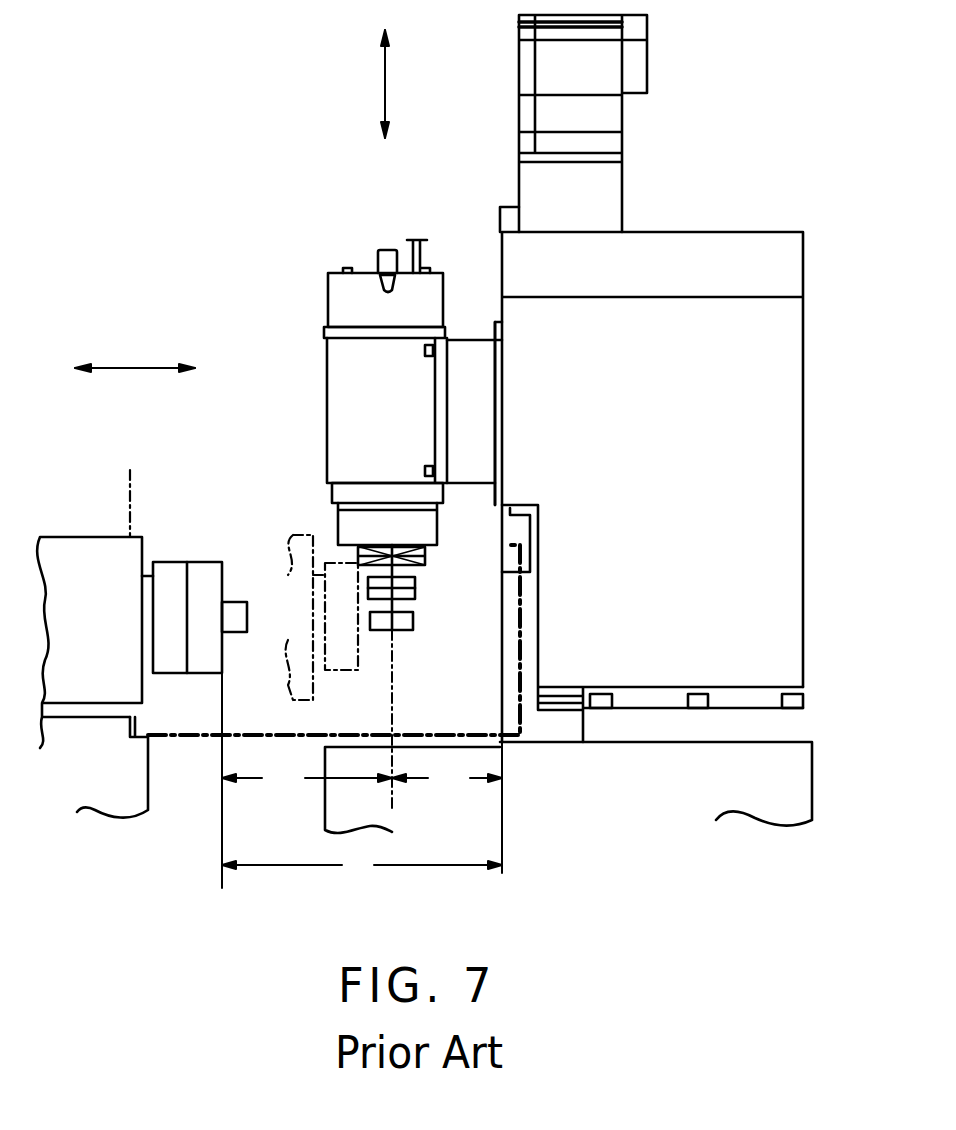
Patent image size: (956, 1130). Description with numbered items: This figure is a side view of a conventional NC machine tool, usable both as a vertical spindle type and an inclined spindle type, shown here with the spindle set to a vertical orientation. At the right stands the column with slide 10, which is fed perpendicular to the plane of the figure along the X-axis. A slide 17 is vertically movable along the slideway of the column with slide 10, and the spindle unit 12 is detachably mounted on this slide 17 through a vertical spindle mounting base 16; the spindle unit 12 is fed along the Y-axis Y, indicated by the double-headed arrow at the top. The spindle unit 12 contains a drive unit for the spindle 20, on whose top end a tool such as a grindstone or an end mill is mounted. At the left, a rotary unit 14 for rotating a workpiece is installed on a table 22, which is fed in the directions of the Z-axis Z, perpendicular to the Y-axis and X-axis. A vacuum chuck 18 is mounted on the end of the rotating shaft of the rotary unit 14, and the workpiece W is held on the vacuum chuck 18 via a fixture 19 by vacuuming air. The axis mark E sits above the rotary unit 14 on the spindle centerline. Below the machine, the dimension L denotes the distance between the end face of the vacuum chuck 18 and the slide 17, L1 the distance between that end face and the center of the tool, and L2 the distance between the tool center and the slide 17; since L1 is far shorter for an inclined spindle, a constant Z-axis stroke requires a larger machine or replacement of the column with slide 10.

The column with slide 10 is at (790, 515).
The spindle unit 12 is at (353, 403).
The rotary unit 14 is at (78, 537).
The vertical spindle mounting base 16 is at (472, 362).
The slide 17 is at (497, 428).
The vacuum chuck 18 is at (172, 562).
The fixture 19 is at (212, 562).
The spindle 20 is at (408, 570).
The table 22 is at (133, 770).
The workpiece W is at (240, 602).
The spindle axis mark E is at (137, 503).
The distance between vacuum chuck end face and slide L is at (362, 865).
The distance between vacuum chuck end face and tool center L1 is at (307, 725).
The distance between tool center and slide L2 is at (447, 807).
The Y-axis Y is at (372, 84).
The Z-axis Z is at (135, 354).